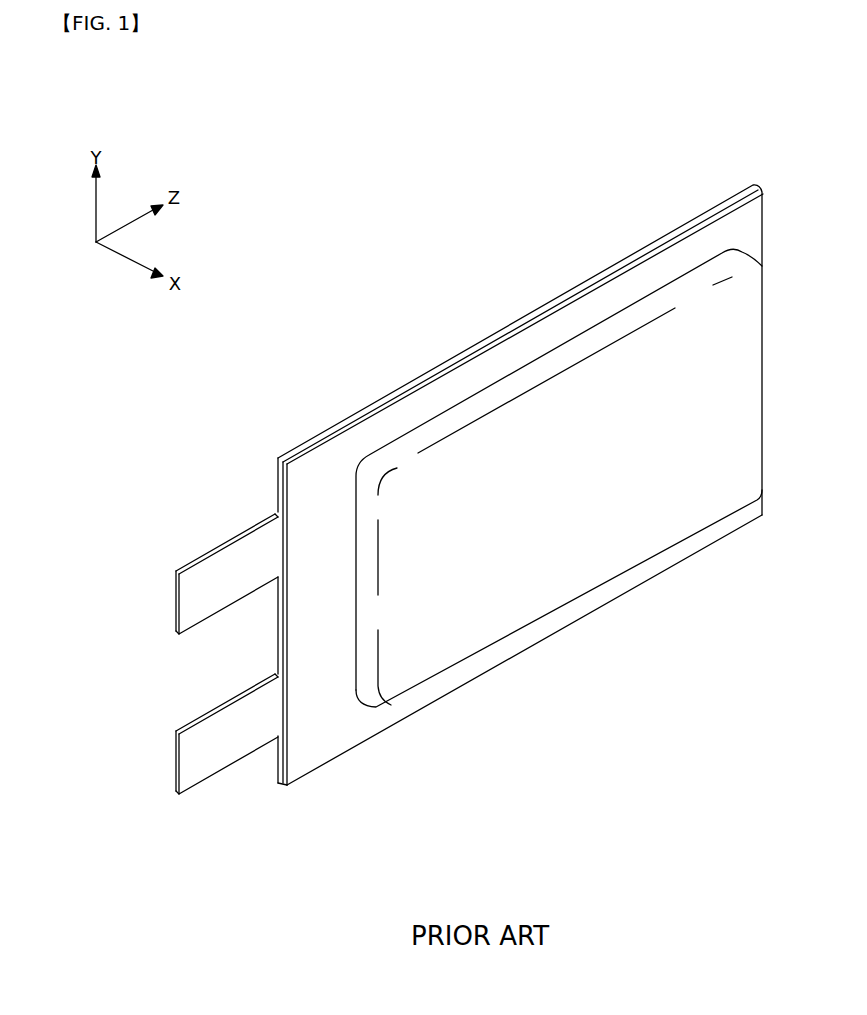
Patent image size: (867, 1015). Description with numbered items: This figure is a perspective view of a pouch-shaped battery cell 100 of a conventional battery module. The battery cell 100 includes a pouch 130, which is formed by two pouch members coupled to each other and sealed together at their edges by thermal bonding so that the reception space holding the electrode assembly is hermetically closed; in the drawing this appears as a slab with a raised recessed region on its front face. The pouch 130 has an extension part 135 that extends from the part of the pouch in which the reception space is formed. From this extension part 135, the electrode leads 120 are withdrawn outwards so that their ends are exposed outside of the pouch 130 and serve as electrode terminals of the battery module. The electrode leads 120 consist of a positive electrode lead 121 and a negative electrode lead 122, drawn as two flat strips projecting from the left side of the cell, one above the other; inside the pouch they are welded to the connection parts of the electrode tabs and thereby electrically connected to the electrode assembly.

The battery cell 100 is at (129, 362).
The electrode leads 120 is at (172, 654).
The positive electrode lead 121 is at (193, 605).
The negative electrode lead 122 is at (232, 732).
The pouch 130 is at (585, 317).
The extension part 135 is at (305, 749).